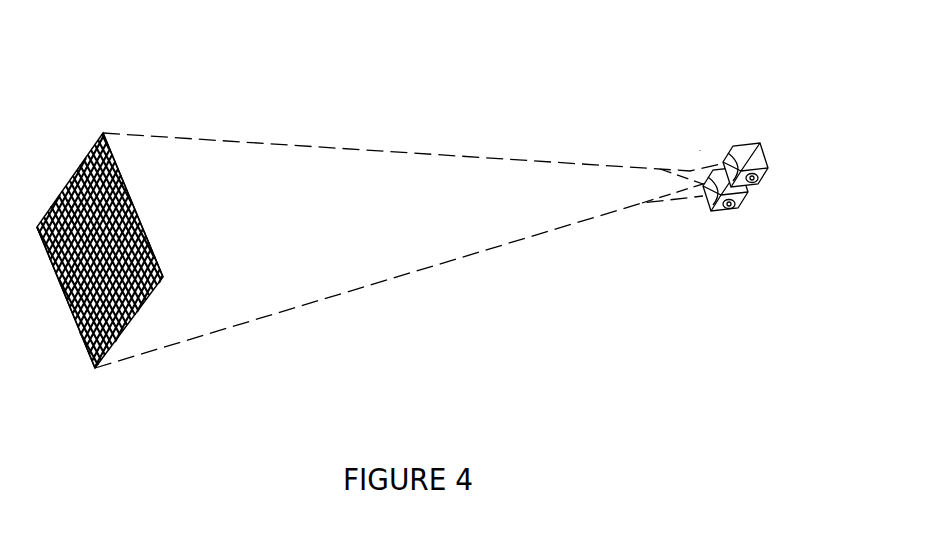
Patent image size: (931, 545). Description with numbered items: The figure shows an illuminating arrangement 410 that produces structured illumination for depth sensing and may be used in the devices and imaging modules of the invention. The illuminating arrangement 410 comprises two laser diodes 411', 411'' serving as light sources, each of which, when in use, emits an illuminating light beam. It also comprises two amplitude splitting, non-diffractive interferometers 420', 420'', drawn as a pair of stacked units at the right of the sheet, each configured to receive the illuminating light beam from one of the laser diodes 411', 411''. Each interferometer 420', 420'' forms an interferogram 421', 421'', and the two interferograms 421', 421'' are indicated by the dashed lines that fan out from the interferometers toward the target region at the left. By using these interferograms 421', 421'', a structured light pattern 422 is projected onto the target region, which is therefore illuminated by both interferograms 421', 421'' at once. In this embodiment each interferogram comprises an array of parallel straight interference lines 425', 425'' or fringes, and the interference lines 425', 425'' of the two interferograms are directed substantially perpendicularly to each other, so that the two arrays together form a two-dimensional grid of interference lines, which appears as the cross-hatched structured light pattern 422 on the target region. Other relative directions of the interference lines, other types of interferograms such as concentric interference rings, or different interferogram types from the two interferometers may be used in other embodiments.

The illuminating arrangement 410 is at (666, 125).
The amplitude splitting, non-diffractive interferometer 420' is at (734, 132).
The amplitude splitting, non-diffractive interferometer 420'' is at (728, 224).
The laser diode 411' is at (770, 132).
The laser diode 411'' is at (749, 241).
The interferogram 421' is at (412, 145).
The interferogram 421'' is at (408, 273).
The structured light pattern 422 is at (67, 162).
The parallel straight interference lines 425' is at (142, 167).
The parallel straight interference lines 425'' is at (103, 318).